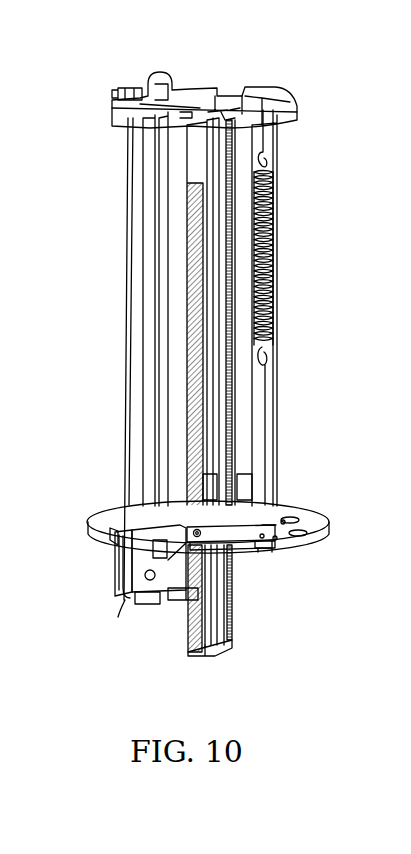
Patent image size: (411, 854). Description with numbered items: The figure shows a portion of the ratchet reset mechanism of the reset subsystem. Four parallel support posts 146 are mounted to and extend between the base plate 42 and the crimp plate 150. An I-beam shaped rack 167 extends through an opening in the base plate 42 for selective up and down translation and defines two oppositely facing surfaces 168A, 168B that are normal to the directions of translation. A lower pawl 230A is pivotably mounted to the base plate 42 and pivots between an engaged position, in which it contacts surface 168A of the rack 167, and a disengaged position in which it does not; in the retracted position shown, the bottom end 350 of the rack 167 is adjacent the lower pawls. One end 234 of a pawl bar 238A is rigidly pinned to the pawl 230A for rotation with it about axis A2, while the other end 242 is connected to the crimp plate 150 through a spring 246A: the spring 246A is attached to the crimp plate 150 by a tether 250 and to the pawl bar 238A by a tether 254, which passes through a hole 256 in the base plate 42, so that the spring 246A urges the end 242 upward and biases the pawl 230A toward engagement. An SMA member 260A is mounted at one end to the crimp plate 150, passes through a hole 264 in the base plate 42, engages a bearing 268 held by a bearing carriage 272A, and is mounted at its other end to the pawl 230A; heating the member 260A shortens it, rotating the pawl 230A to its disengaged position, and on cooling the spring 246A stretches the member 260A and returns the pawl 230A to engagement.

The crimp plate 150 is at (297, 106).
The tether 250 is at (262, 128).
The support posts 146 is at (160, 170).
The spring 246A is at (270, 253).
The SMA member 260A is at (128, 297).
The tether 254 is at (266, 386).
The axis A2 is at (195, 530).
The end of pawl bar 234 is at (190, 530).
The hole 264 is at (113, 531).
The bearing carriage 272A is at (117, 566).
The bearing 268 is at (115, 604).
The lower pawl 230A is at (150, 594).
The surface 168A is at (188, 632).
The bottom end of rack 350 is at (205, 650).
The rack 167 is at (220, 630).
The surface 168B is at (236, 606).
The pawl bar 238A is at (243, 545).
The end of pawl bar 242 is at (280, 536).
The hole 256 is at (284, 518).
The base plate 42 is at (330, 512).